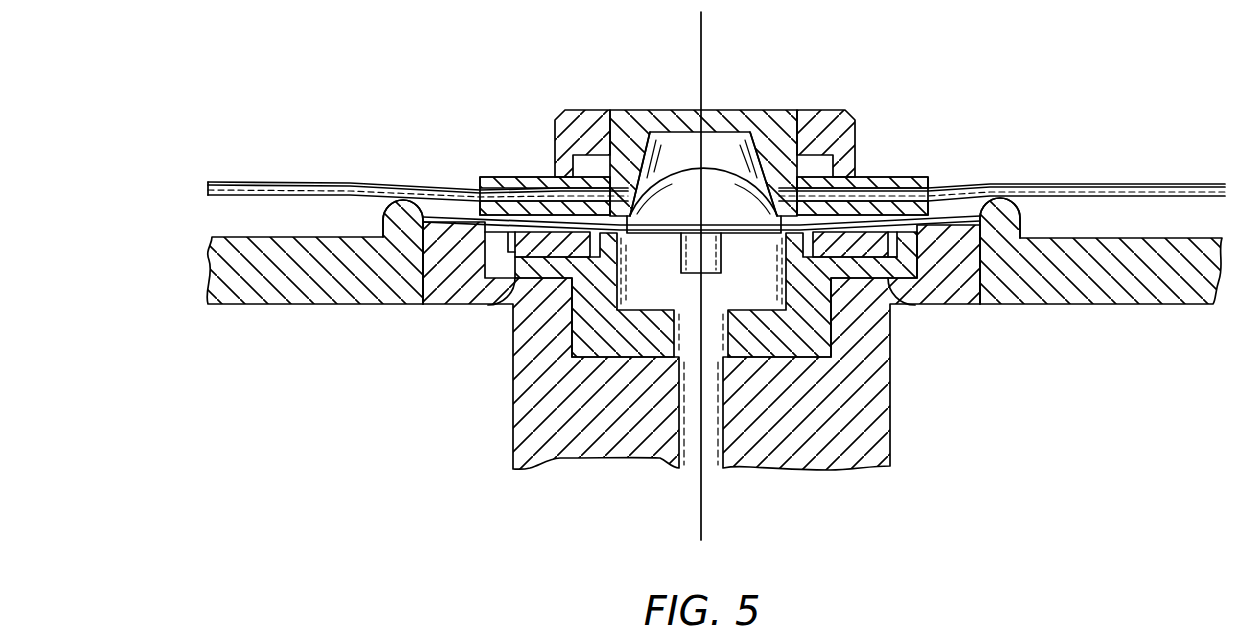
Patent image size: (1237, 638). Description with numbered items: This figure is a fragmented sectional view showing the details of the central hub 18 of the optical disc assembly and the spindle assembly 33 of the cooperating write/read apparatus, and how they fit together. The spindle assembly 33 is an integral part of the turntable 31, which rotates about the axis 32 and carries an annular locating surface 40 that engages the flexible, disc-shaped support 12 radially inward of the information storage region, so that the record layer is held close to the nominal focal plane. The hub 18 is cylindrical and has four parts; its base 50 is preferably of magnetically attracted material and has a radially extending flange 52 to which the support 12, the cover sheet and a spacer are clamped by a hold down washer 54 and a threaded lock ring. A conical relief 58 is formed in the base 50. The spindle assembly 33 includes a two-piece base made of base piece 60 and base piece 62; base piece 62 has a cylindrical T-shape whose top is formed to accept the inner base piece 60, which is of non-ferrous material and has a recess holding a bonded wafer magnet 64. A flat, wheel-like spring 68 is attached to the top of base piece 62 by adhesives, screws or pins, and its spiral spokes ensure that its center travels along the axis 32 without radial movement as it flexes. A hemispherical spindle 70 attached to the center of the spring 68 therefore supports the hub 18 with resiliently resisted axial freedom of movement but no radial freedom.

The support 12 is at (220, 198).
The central hub 18 is at (553, 103).
The turntable 31 is at (250, 305).
The axis 32 is at (705, 49).
The spindle assembly 33 is at (463, 388).
The annular locating surface 40 is at (379, 201).
The base 50 is at (650, 109).
The flange 52 is at (480, 207).
The hold down washer 54 is at (497, 177).
The conical relief 58 is at (751, 147).
The base piece 60 is at (487, 306).
The base piece 62 is at (888, 421).
The wafer magnet 64 is at (890, 282).
The spring 68 is at (866, 218).
The hemispherical spindle 70 is at (718, 176).